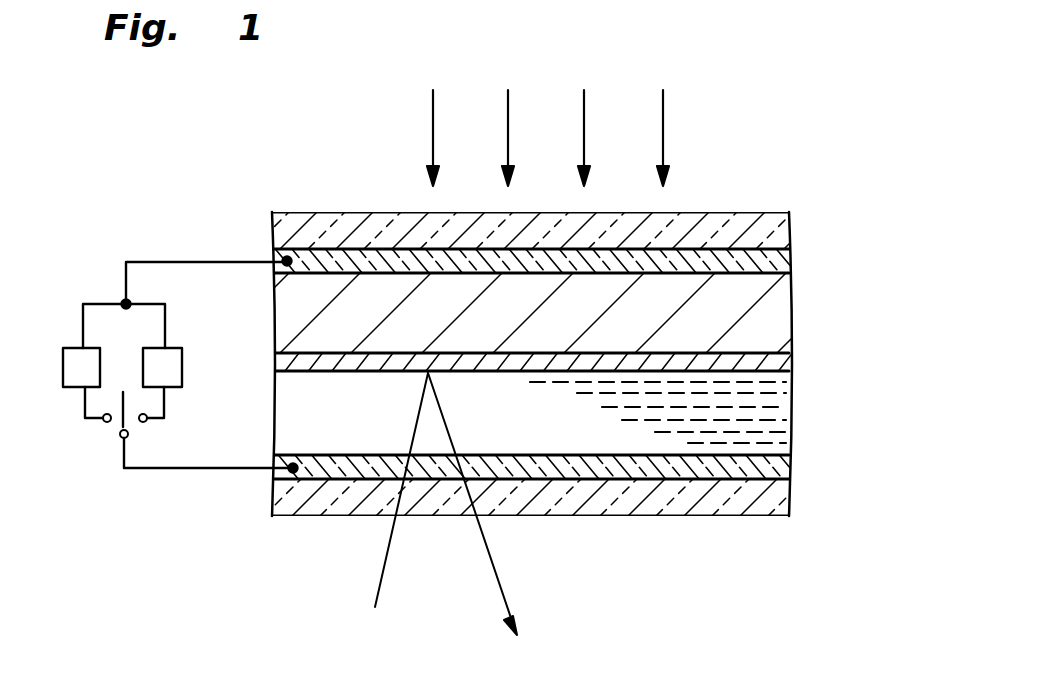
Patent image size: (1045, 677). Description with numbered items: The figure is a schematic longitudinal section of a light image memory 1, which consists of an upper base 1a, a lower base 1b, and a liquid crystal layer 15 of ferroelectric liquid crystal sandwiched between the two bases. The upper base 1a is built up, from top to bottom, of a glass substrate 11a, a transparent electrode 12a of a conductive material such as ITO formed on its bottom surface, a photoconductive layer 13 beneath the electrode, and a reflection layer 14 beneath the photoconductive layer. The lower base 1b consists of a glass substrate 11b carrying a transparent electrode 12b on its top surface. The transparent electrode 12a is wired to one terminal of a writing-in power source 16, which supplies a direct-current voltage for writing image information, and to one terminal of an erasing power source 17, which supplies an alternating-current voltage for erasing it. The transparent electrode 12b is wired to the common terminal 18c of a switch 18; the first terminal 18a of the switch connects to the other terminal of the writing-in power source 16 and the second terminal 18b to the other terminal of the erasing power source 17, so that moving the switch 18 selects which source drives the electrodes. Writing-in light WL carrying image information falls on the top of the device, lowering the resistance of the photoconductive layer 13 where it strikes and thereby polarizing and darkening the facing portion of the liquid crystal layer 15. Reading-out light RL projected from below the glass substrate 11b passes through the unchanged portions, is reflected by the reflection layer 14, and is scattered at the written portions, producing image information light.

The light image memory 1 is at (576, 306).
The upper base 1a is at (533, 291).
The lower base 1b is at (534, 485).
The glass substrate 11a is at (522, 230).
The glass substrate 11b is at (534, 497).
The transparent electrode 12a is at (542, 261).
The transparent electrode 12b is at (544, 467).
The photoconductive layer 13 is at (533, 313).
The reflection layer 14 is at (527, 362).
The liquid crystal layer 15 is at (658, 412).
The writing-in power source 16 is at (73, 346).
The erasing power source 17 is at (182, 362).
The switch 18 is at (151, 470).
The first terminal 18a is at (104, 422).
The second terminal 18b is at (147, 421).
The common terminal 18c is at (123, 440).
The writing-in light WL is at (433, 133).
The reading-out light RL is at (387, 555).